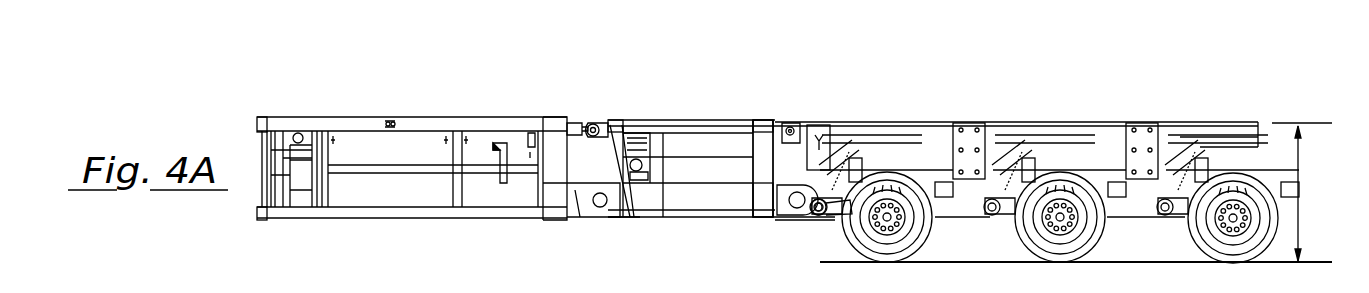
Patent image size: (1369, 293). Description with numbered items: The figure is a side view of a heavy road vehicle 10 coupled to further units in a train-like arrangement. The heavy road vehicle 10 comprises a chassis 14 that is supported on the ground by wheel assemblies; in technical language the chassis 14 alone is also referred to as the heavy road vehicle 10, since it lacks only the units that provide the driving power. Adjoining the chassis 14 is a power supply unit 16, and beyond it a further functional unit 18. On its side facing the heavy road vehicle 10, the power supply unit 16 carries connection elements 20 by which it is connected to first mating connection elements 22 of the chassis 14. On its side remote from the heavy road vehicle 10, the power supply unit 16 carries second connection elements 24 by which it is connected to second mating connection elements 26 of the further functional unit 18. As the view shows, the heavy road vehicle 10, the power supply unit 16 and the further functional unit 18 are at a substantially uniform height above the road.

The heavy road vehicle 10 is at (1188, 70).
The chassis 14 is at (1050, 125).
The power supply unit 16 is at (700, 147).
The further functional unit 18 is at (395, 148).
The connection elements 20 is at (775, 125).
The first mating connection elements 22 is at (788, 127).
The second connection elements 24 is at (593, 128).
The second mating connection elements 26 is at (572, 127).